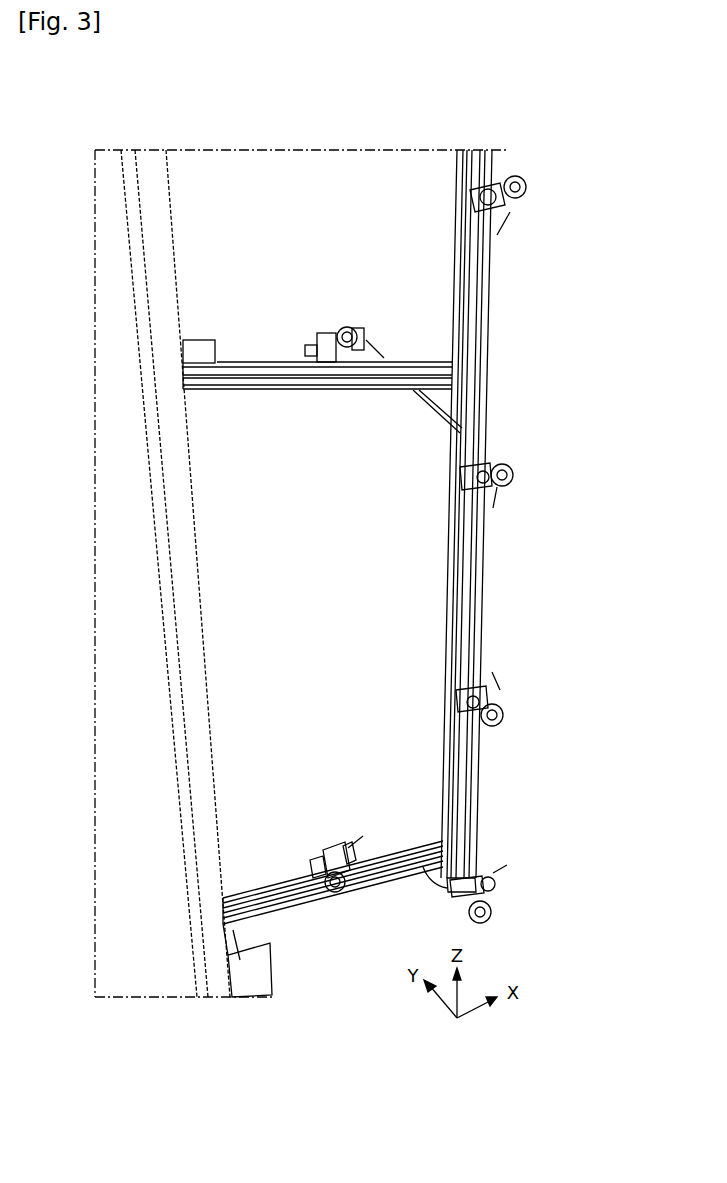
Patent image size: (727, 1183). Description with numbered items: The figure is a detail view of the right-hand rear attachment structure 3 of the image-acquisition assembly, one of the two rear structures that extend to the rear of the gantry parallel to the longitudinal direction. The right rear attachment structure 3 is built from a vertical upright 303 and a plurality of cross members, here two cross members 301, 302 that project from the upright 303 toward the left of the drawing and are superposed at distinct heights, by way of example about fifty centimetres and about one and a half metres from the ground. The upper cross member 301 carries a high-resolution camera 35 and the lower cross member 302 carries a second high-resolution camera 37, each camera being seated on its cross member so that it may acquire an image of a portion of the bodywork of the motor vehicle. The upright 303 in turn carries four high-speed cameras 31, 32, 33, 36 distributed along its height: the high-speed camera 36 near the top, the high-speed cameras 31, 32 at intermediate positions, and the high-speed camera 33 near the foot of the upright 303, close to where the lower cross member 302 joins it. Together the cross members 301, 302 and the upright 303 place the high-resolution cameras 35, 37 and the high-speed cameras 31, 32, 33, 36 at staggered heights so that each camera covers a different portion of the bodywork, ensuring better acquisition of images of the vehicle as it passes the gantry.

The right rear attachment structure 3 is at (548, 150).
The cross member 301 is at (251, 357).
The cross member 302 is at (293, 913).
The upright 303 is at (477, 558).
The high-speed camera 31 is at (517, 472).
The high-speed camera 32 is at (508, 702).
The high-speed camera 33 is at (500, 885).
The high-resolution camera 35 is at (352, 323).
The high-speed camera 36 is at (530, 193).
The high-resolution camera 37 is at (337, 852).